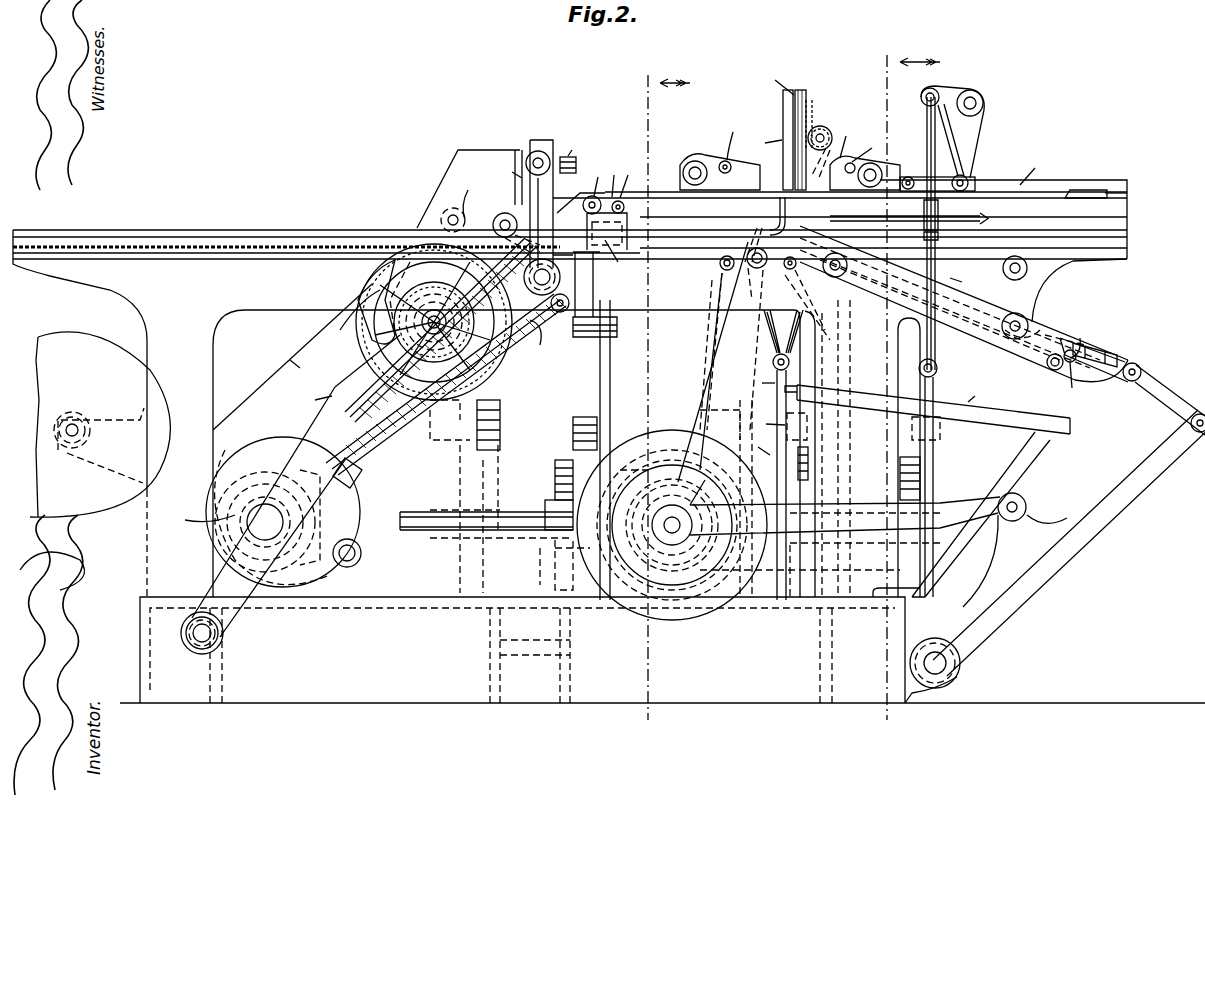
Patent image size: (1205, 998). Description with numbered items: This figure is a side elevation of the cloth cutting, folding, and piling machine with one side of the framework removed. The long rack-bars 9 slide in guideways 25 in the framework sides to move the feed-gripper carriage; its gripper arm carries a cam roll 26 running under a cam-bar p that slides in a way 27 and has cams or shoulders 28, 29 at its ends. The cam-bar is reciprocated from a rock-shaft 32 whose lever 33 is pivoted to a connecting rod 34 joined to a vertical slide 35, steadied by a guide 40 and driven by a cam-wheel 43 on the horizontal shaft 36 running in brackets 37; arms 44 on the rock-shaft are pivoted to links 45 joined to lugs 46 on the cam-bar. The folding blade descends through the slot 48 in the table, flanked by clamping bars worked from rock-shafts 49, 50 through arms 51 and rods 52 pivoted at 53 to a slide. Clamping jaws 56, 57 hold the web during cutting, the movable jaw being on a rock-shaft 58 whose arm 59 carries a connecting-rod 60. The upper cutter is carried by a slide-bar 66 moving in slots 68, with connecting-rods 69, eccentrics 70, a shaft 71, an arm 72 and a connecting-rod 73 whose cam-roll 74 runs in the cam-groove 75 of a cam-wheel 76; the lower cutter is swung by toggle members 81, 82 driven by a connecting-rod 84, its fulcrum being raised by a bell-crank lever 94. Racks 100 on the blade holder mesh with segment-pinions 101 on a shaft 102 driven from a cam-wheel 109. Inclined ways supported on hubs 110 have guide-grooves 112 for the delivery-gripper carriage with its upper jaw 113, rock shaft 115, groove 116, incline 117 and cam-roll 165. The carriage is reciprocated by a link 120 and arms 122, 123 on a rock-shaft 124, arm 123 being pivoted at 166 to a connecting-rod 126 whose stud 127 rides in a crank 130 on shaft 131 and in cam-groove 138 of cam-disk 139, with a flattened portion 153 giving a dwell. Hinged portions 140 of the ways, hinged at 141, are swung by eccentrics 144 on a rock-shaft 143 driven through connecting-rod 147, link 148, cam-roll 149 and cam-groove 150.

The rack 9 is at (387, 234).
The longitudinal grooves or guideways 25 is at (1120, 245).
The horizontal guide-groove or way 27 is at (1123, 193).
The cam or shoulder 29 is at (1068, 188).
The cam or shoulder 28 is at (617, 197).
The cam roll 26 is at (640, 190).
The rock-shaft 32 is at (983, 103).
The lever 33 is at (940, 92).
The connecting rod 34 is at (926, 140).
The vertical slide 35 is at (938, 378).
The horizontal shaft 36 is at (518, 510).
The brackets 37 is at (370, 550).
The guide 40 is at (908, 428).
The cam-wheel 43 is at (925, 460).
The arms or levers 44 is at (966, 145).
The links 45 is at (950, 193).
The lugs 46 is at (903, 173).
The slot 48 is at (772, 216).
The rock-shaft 49 is at (690, 162).
The rock-shaft 50 is at (878, 160).
The arm or lever 51 is at (701, 160).
The rods 52 is at (766, 325).
The pivot 53 is at (772, 362).
The upper clamping jaw 56 is at (510, 212).
The lower or movable clamping jaw 57 is at (875, 160).
The rock-shaft 58 is at (493, 226).
The arm or lever 59 is at (520, 244).
The connecting-rod 60 is at (350, 420).
The transverse slide-bar 66 is at (541, 140).
The vertical slots 68 is at (535, 150).
The short connecting-rods 69 is at (520, 152).
The eccentrics 70 is at (560, 312).
The shaft 71 is at (544, 342).
The arm or lever 72 is at (580, 292).
The connecting-rod 73 is at (392, 440).
The cam-roll 74 is at (352, 482).
The cam-groove 75 is at (270, 490).
The cam-wheel 76 is at (262, 440).
The upper toggle member 81 is at (600, 296).
The lower toggle member 82 is at (610, 378).
The connecting-rod 84 is at (582, 420).
The bell-crank lever 94 is at (500, 445).
The racks 100 is at (810, 103).
The segment-pinions 101 is at (828, 128).
The transverse shaft 102 is at (830, 148).
The cam-wheel 109 is at (808, 483).
The studs or hubs 110 is at (1035, 318).
The guide-grooves 112 is at (1050, 340).
The stationary upper jaw 113 is at (1070, 348).
The rock shaft 115 is at (1078, 362).
The longitudinal groove 116 is at (1025, 350).
The cam or inclined portion 117 is at (1040, 360).
The link 120 is at (1158, 392).
The arm 122 is at (1069, 543).
The arm 123 is at (981, 519).
The transverse rock-shaft 124 is at (948, 665).
The connecting-rod 126 is at (957, 505).
The stud or short shaft 127 is at (722, 600).
The crank 130 is at (697, 555).
The shaft 131 is at (670, 542).
The cam-groove 138 is at (672, 514).
The stationary cam-disk 139 is at (665, 432).
The hinged front lower portions 140 is at (770, 264).
The hinge 141 is at (800, 270).
The transverse rock-shaft 143 is at (735, 275).
The eccentrics 144 is at (765, 292).
The connecting-rod 147 is at (700, 352).
The link 148 is at (688, 490).
The cam-roll 149 is at (725, 430).
The cam-groove 150 is at (652, 555).
The flattened portion 153 is at (590, 555).
The cam-roll 165 is at (1056, 372).
The pivot 166 is at (1032, 502).